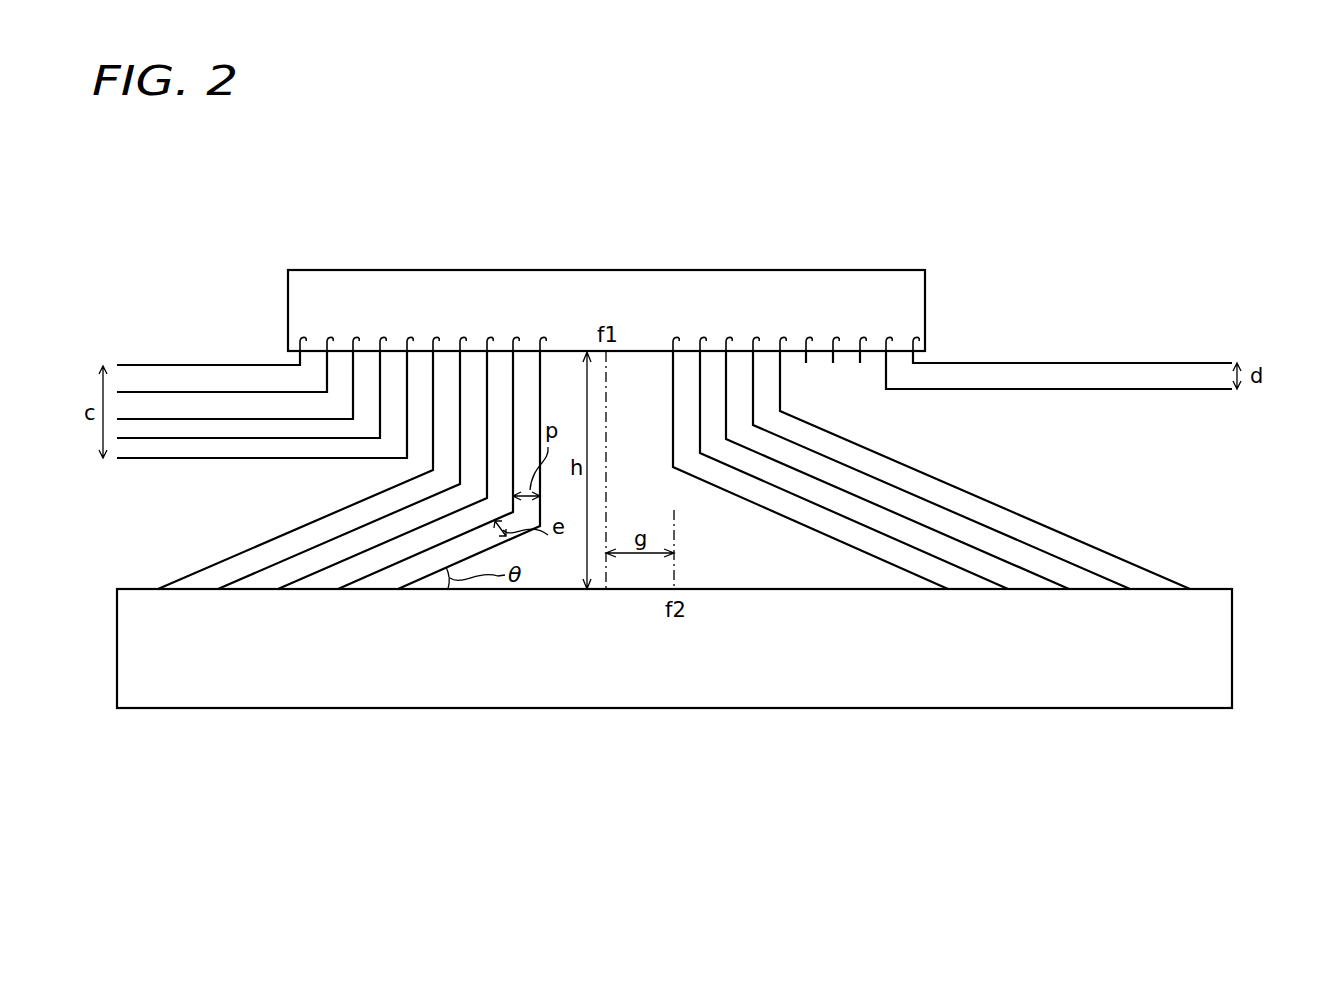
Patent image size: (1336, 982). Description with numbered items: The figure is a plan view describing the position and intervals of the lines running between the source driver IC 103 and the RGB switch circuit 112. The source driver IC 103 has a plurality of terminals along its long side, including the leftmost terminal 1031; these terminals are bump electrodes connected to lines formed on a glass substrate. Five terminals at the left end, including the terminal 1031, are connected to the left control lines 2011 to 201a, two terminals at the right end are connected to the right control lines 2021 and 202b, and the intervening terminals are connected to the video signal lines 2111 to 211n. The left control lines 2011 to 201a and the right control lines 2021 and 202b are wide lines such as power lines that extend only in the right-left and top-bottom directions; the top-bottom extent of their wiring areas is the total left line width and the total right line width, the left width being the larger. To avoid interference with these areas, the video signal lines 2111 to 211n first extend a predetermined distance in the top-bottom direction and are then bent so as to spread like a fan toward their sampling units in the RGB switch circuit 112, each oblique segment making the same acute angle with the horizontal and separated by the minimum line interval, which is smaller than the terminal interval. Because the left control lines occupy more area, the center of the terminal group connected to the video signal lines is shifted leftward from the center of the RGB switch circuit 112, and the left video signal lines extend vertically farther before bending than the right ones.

The source driver IC 103 is at (612, 270).
The terminal 1031 is at (297, 346).
The left control line 2011 is at (162, 365).
The left control line 201a is at (250, 460).
The video signal line 2111 is at (268, 539).
The video signal line 211n is at (875, 447).
The right control line 2021 is at (1096, 363).
The right control line 202b is at (1098, 390).
The RGB switch circuit 112 is at (670, 710).